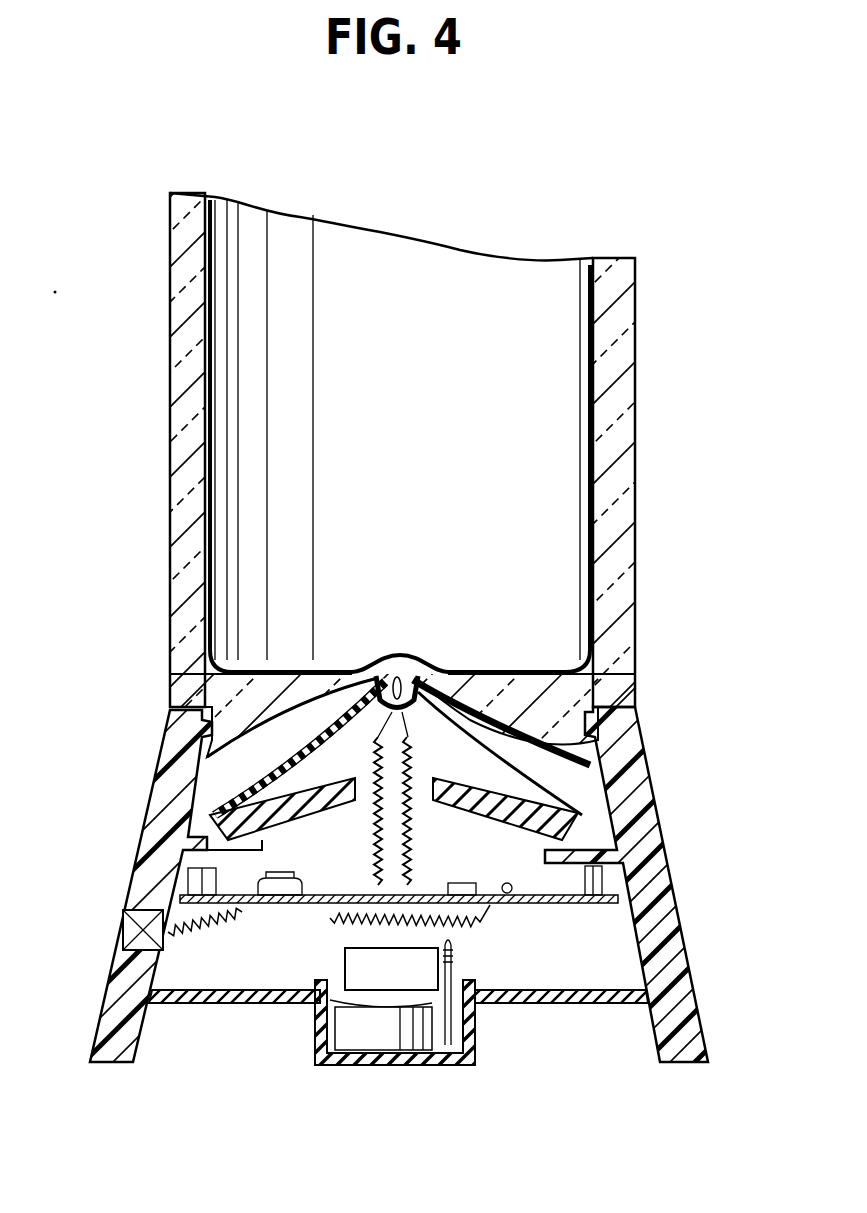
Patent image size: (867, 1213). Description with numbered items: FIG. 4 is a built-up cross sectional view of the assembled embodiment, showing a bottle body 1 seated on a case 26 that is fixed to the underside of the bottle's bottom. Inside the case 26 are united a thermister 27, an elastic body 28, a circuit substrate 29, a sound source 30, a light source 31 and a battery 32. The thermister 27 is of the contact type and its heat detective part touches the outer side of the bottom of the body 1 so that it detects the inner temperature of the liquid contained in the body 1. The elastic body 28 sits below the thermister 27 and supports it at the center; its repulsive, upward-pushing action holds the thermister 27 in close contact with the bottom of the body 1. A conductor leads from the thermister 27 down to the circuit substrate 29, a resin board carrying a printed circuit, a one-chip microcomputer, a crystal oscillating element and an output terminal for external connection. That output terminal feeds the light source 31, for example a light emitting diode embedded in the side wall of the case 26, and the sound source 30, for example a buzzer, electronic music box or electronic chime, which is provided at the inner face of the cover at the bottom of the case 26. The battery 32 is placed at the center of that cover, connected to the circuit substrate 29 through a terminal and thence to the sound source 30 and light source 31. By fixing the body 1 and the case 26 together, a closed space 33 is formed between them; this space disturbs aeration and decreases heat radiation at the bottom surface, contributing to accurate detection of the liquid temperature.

The body 1 is at (640, 420).
The case 26 is at (662, 800).
The thermister 27 is at (410, 736).
The elastic body 28 is at (530, 772).
The circuit substrate 29 is at (560, 905).
The sound source 30 is at (345, 975).
The light source 31 is at (123, 940).
The battery 32 is at (430, 1065).
The closed space 33 is at (218, 793).